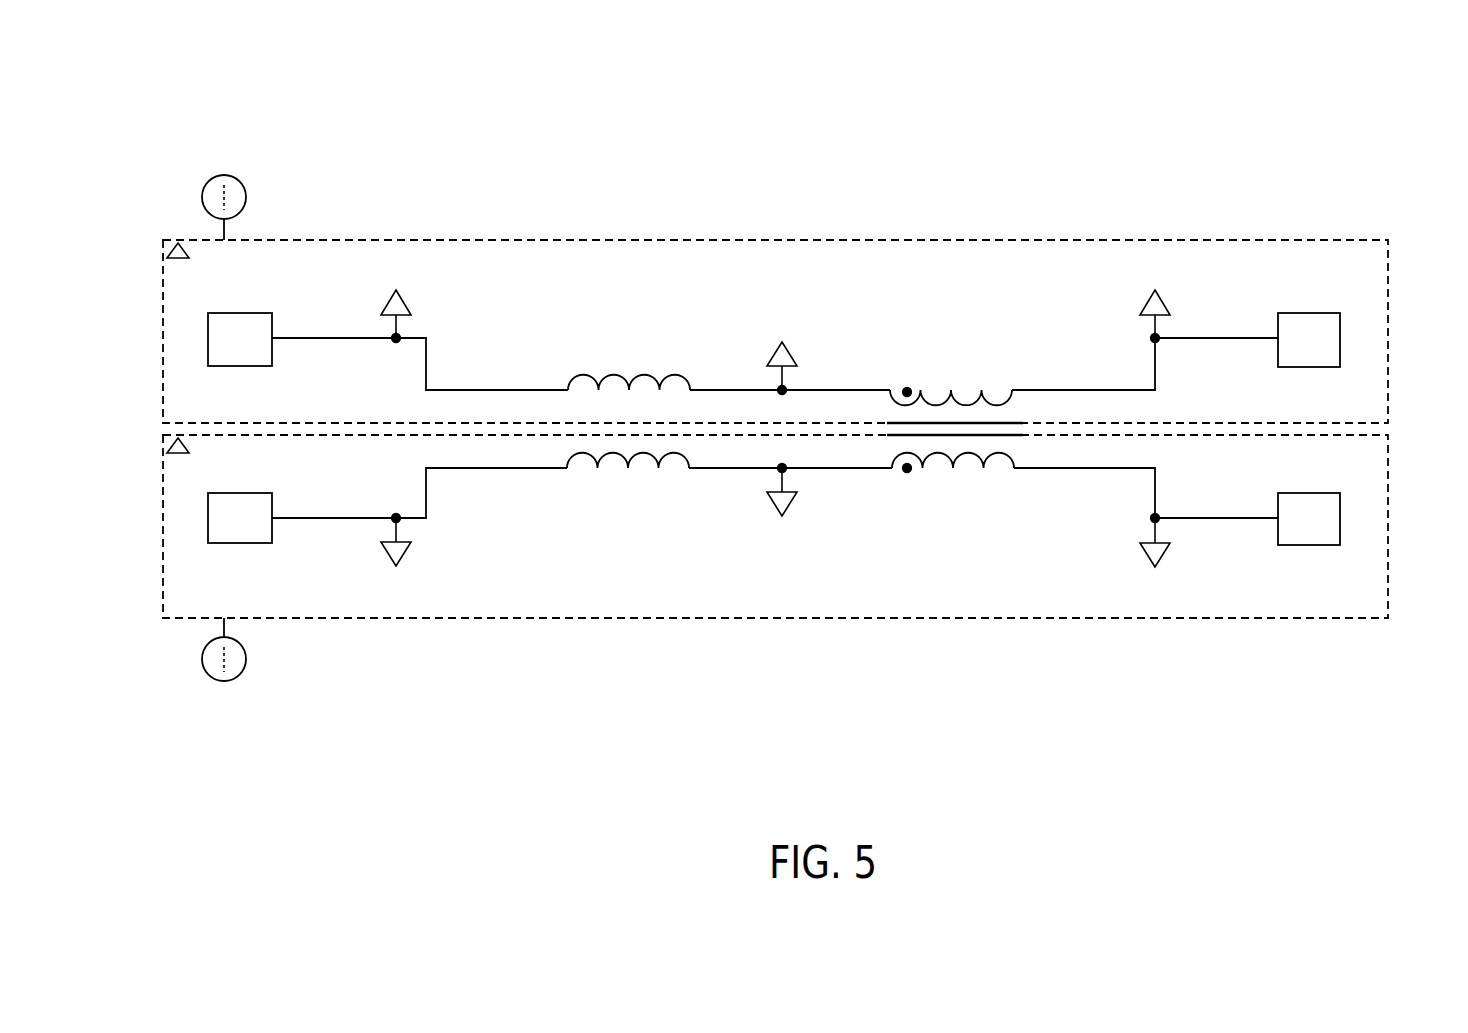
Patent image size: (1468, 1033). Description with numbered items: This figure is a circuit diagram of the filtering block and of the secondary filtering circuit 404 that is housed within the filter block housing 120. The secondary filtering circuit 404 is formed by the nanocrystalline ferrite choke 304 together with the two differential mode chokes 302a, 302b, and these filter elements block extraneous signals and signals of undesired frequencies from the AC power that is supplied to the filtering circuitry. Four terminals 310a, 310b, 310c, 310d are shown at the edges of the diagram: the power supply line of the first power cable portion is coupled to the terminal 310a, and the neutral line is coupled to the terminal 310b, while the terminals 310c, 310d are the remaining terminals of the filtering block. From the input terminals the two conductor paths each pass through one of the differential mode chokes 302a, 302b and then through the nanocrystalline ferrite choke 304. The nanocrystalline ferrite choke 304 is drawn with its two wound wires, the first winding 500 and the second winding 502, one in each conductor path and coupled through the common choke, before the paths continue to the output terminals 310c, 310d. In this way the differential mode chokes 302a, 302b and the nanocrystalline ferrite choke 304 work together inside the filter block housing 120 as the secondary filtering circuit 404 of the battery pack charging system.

The filter block housing 120 is at (168, 98).
The secondary filtering circuit 404 is at (778, 429).
The nanocrystalline ferrite choke 304 is at (818, 206).
The terminal 310a is at (216, 342).
The terminal 310b is at (216, 520).
The terminal 310c is at (1308, 340).
The terminal 310d is at (1308, 518).
The differential mode choke 302a is at (580, 386).
The differential mode choke 302b is at (592, 458).
The winding 500 is at (967, 402).
The winding 502 is at (967, 458).